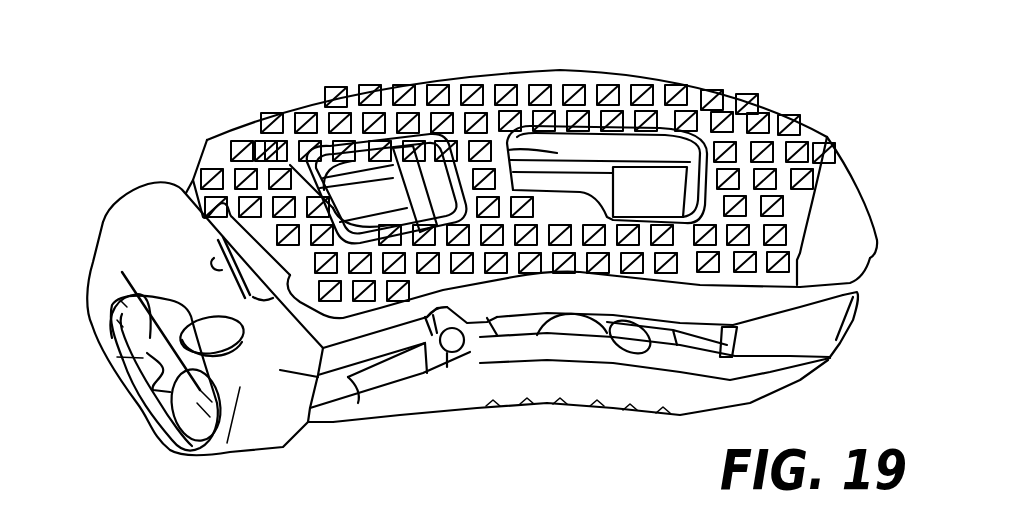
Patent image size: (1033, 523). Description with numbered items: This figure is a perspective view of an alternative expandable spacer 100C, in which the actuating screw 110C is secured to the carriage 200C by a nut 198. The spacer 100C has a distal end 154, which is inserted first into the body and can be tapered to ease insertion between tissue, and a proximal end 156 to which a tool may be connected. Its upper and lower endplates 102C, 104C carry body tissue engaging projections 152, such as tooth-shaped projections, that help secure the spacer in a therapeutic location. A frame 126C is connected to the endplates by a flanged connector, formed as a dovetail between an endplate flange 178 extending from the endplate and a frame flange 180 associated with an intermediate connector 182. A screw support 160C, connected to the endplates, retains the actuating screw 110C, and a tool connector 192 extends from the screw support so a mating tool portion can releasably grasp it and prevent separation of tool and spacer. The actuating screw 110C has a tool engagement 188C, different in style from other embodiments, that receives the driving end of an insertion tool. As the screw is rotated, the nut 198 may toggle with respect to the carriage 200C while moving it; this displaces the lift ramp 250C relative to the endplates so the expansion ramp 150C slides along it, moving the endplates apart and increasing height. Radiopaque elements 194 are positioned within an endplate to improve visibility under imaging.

The spacer 100C is at (863, 362).
The endplate 102C is at (618, 80).
The endplate 104C is at (401, 408).
The actuating screw 110C is at (266, 140).
The frame 126C is at (358, 404).
The expansion ramp 150C is at (482, 342).
The body tissue engaging projections 152 is at (651, 418).
The distal end 154 is at (881, 269).
The proximal end 156 is at (159, 161).
The screw support 160C is at (97, 322).
The endplate flange 178 is at (200, 147).
The frame flange 180 is at (228, 180).
The intermediate connector 182 is at (213, 277).
The tool engagement 188C is at (178, 450).
The tool connector 192 is at (180, 325).
The radiopaque elements 194 is at (827, 137).
The nut 198 is at (383, 172).
The carriage 200C is at (333, 208).
The lift ramp 250C is at (466, 356).